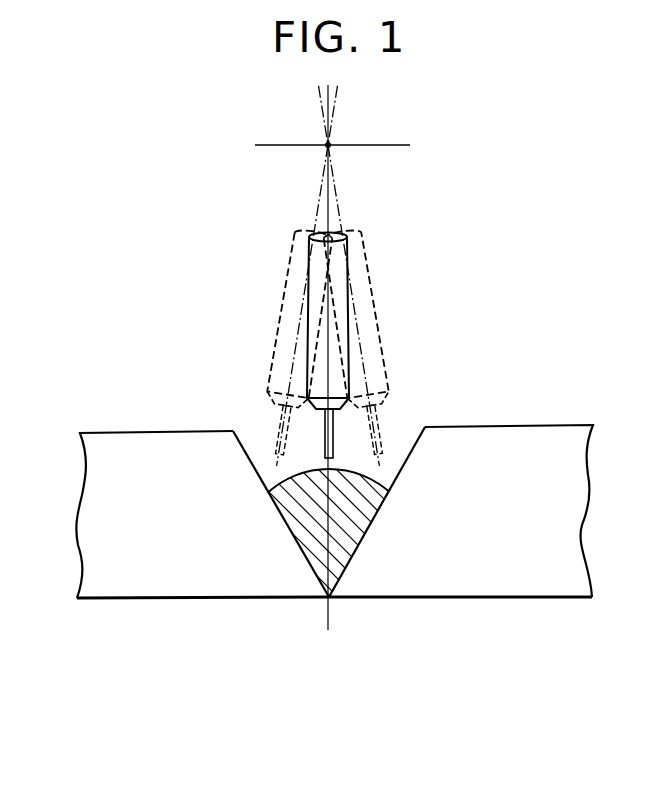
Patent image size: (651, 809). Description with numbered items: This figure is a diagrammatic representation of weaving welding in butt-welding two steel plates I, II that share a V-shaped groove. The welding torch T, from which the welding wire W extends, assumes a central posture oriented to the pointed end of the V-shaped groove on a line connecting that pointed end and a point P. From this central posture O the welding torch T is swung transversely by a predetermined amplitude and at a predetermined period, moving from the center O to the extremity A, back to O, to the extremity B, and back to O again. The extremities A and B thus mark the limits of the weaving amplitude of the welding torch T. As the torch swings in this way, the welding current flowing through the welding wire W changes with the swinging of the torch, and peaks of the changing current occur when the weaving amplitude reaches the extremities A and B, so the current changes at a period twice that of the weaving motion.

The point P is at (332, 157).
The center of weaving motion O is at (341, 357).
The welding torch T is at (337, 381).
The welding wire W is at (333, 423).
The extremity B is at (307, 275).
The extremity A is at (350, 275).
The steel plate I is at (461, 511).
The steel plate II is at (202, 514).